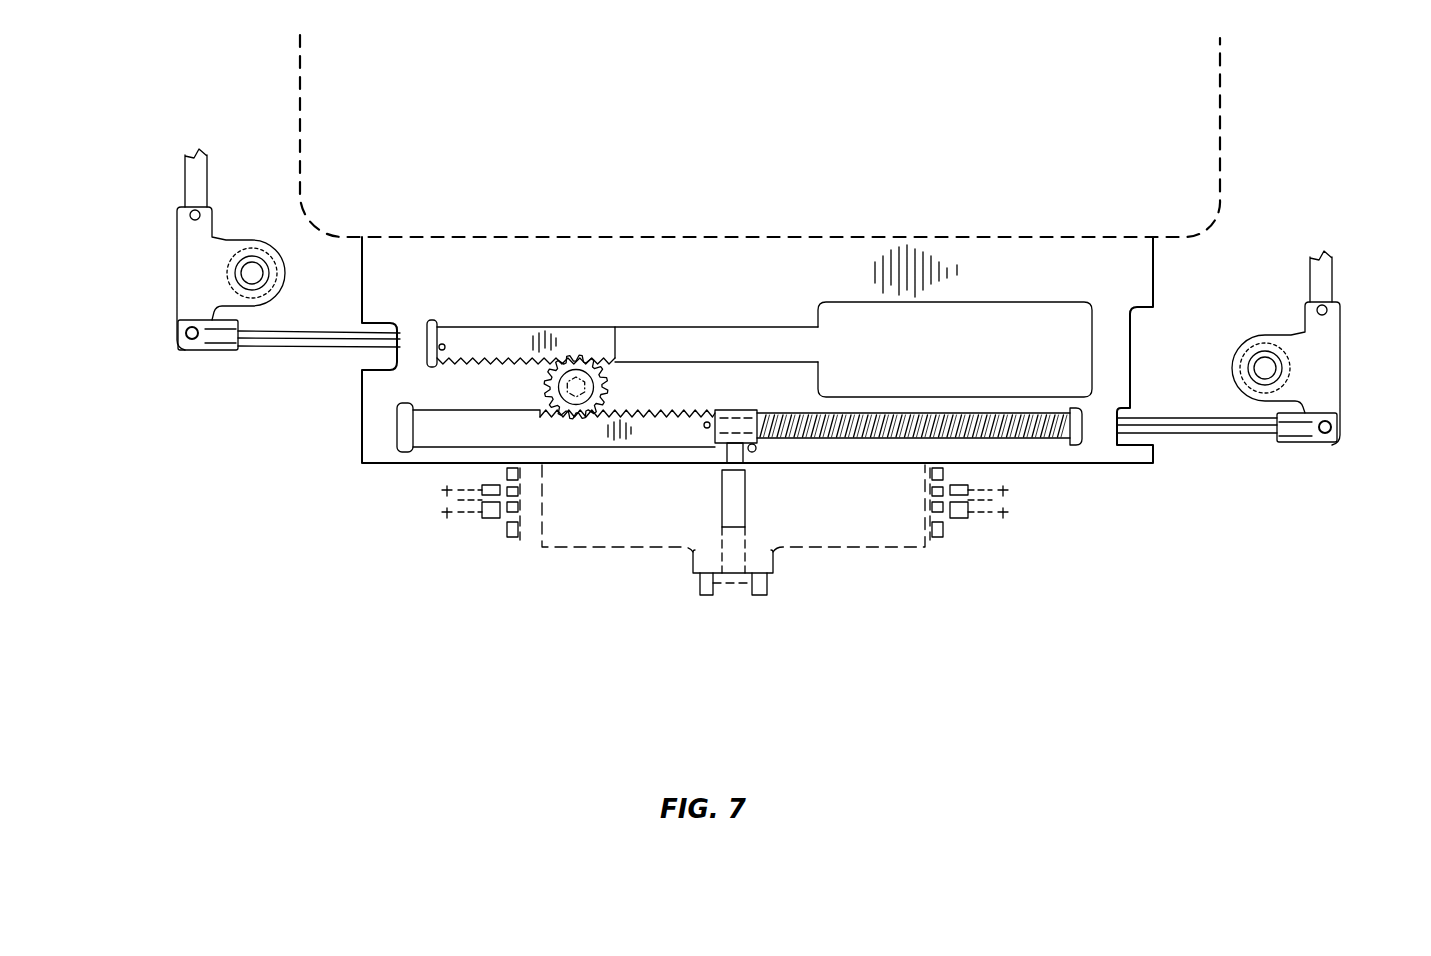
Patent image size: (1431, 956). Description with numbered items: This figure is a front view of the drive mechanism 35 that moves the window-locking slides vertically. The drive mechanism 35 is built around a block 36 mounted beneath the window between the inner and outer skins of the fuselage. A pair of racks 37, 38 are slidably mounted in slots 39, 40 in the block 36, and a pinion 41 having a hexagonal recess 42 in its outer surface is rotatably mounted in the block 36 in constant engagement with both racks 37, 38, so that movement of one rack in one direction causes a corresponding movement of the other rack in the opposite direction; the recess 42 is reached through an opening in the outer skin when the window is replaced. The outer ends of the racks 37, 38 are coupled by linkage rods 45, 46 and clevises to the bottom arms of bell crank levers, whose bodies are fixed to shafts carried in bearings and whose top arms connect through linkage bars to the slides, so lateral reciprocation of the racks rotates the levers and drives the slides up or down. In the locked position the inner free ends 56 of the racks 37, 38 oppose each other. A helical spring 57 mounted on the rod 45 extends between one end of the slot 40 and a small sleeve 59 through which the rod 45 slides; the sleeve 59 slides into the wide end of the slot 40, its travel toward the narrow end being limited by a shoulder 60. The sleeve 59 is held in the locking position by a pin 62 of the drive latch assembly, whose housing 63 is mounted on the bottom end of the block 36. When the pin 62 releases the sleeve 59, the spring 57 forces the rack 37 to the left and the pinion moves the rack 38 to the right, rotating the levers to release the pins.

The drive mechanism 35 is at (312, 494).
The block 36 is at (570, 265).
The rack 37 is at (642, 440).
The rack 38 is at (472, 340).
The slot 39 is at (768, 327).
The slot 40 is at (425, 447).
The pinion 41 is at (600, 382).
The hexagonal recess 42 is at (571, 366).
The linkage rod 45 is at (1212, 433).
The linkage rod 46 is at (303, 343).
The inner free end 56 is at (603, 375).
The helical spring 57 is at (863, 418).
The sleeve 59 is at (743, 410).
The shoulder 60 is at (755, 450).
The pin 62 is at (727, 517).
The housing 63 is at (807, 551).